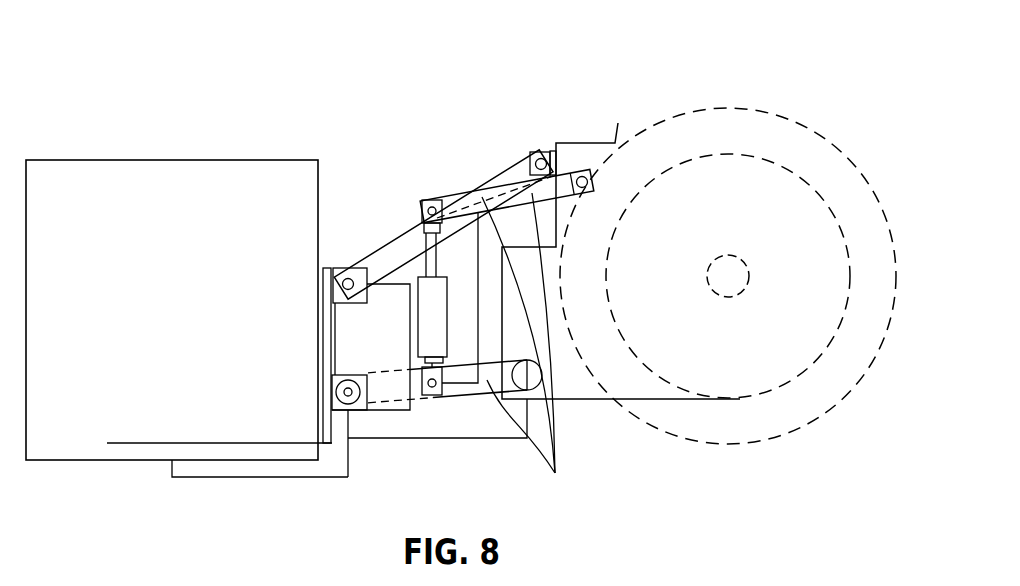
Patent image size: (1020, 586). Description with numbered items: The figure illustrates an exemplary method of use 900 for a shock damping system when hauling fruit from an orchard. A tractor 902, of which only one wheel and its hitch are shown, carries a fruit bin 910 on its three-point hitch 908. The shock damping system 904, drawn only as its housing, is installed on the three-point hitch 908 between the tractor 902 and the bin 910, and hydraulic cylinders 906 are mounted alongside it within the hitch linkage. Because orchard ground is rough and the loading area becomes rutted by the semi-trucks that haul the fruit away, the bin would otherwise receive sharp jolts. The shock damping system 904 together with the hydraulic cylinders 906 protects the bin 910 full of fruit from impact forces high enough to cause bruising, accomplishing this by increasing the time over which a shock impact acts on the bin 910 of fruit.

The method of use 900 is at (397, 64).
The tractor 902 is at (793, 432).
The shock damping system 904 is at (352, 333).
The hydraulic cylinders 906 is at (437, 300).
The 3-point hitch 908 is at (388, 258).
The bins 910 is at (127, 160).